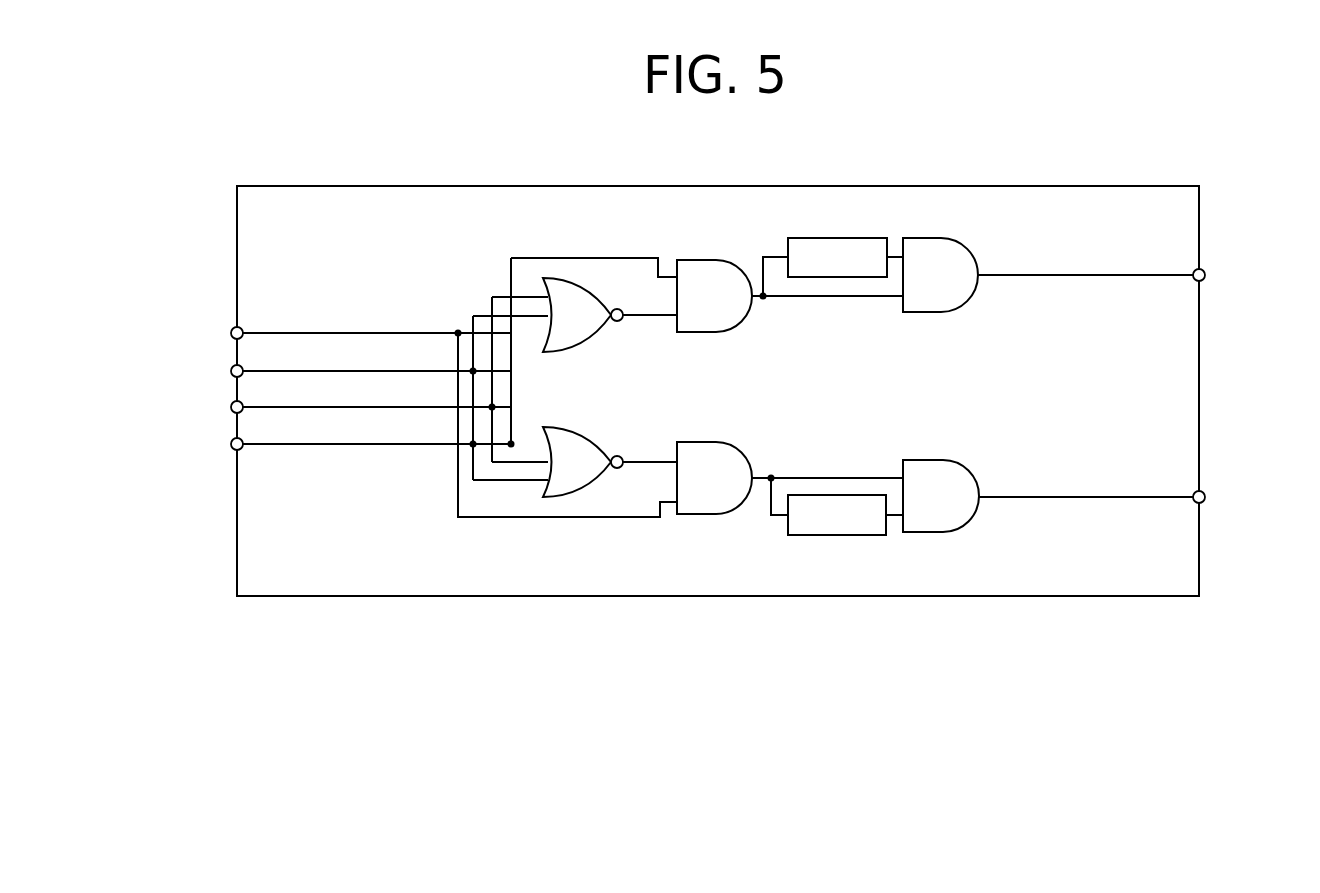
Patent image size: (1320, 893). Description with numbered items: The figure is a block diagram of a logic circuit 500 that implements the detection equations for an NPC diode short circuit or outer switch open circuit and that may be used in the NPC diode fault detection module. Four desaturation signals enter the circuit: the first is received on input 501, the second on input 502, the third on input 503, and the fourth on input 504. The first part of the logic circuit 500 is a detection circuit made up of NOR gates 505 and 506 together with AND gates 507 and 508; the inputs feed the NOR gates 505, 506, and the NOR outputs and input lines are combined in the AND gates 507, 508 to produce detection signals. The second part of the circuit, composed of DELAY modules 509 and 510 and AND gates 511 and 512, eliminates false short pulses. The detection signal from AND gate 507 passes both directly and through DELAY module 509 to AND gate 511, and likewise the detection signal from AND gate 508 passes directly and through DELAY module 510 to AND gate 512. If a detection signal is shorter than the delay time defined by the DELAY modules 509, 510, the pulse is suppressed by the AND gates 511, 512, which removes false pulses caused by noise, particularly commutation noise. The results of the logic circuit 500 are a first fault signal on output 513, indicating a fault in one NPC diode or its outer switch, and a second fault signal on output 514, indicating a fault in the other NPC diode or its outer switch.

The logic circuit 500 is at (305, 159).
The input 501 is at (231, 333).
The input 502 is at (231, 371).
The input 503 is at (231, 407).
The input 504 is at (231, 445).
The NOR gate 505 is at (597, 337).
The NOR gate 506 is at (575, 428).
The AND gate 507 is at (706, 332).
The AND gate 508 is at (697, 442).
The DELAY module 509 is at (825, 238).
The DELAY module 510 is at (835, 535).
The AND gate 511 is at (942, 312).
The AND gate 512 is at (958, 532).
The output 513 is at (1206, 274).
The output 514 is at (1206, 498).